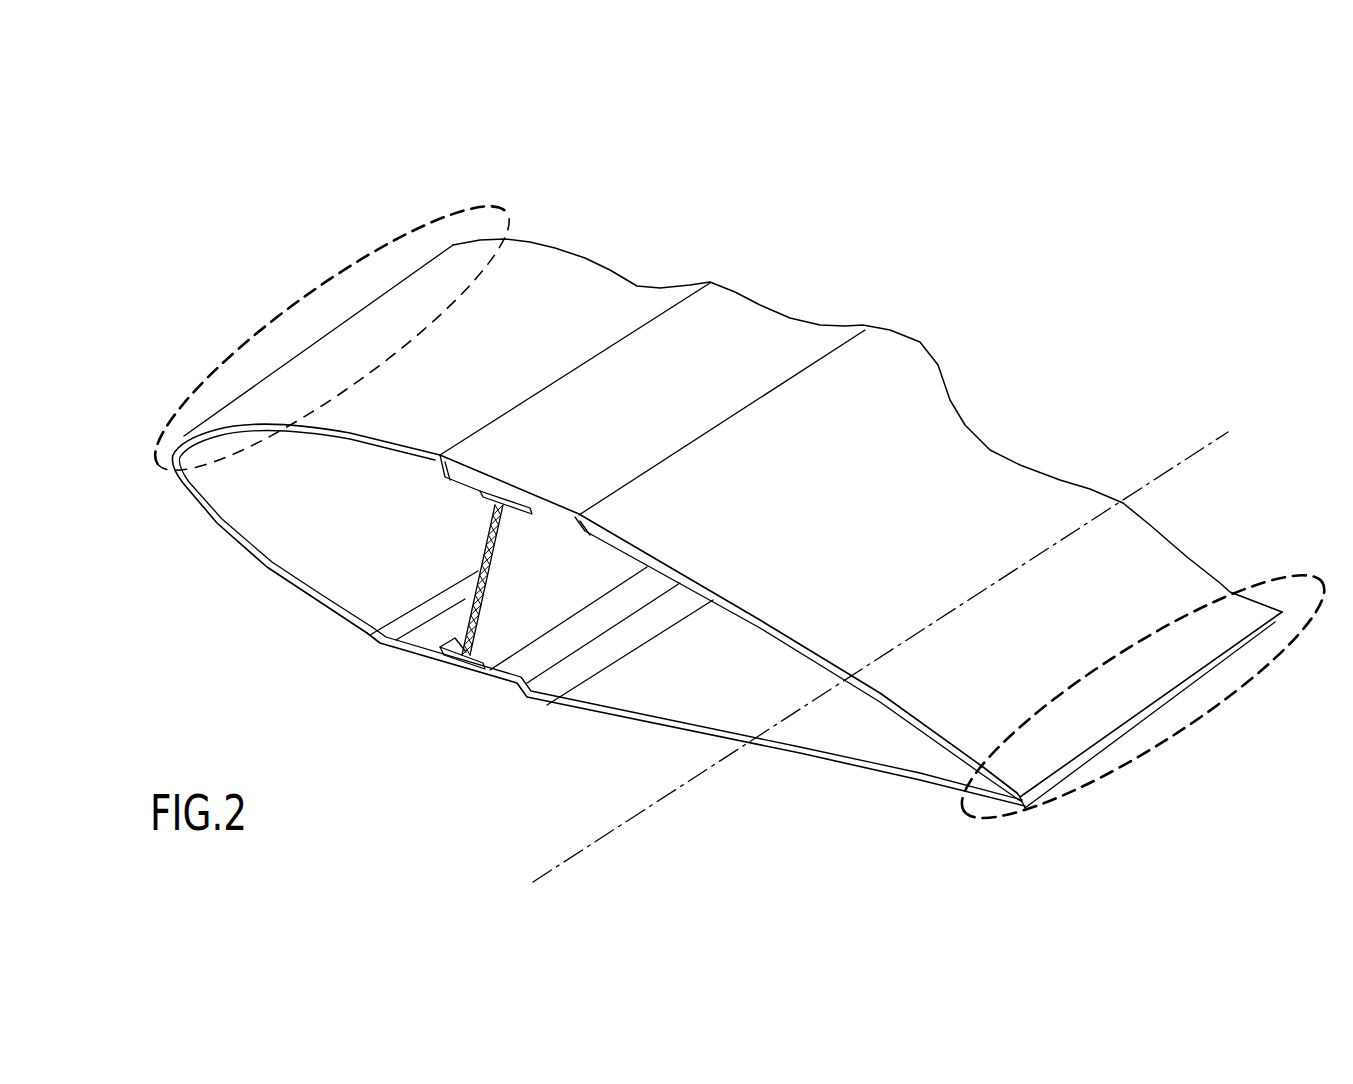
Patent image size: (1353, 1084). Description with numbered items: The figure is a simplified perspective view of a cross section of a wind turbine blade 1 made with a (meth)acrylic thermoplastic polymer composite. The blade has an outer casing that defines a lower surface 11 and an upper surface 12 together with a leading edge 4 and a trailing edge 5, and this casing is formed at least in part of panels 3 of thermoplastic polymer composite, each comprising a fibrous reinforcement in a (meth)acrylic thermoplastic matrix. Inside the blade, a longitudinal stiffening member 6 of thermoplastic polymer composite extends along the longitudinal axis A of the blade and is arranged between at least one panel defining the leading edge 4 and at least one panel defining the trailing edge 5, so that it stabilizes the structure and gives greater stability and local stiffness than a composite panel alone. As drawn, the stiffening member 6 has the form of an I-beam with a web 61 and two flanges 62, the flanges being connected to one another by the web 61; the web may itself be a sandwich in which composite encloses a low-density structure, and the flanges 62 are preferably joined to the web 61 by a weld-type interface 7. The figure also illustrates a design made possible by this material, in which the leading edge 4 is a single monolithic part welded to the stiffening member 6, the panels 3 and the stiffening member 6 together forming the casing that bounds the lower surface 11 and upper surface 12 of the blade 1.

The wind turbine blade 1 is at (345, 169).
The panels of thermoplastic polymer composite 3 is at (577, 273).
The leading edge 4 is at (150, 430).
The trailing edge 5 is at (1070, 801).
The stiffening member 6 is at (397, 554).
The weld-type interface 7 is at (582, 510).
The lower surface 11 is at (843, 812).
The upper surface 12 is at (777, 191).
The web 61 is at (497, 603).
The flanges 62 is at (462, 682).
The longitudinal axis A is at (880, 657).